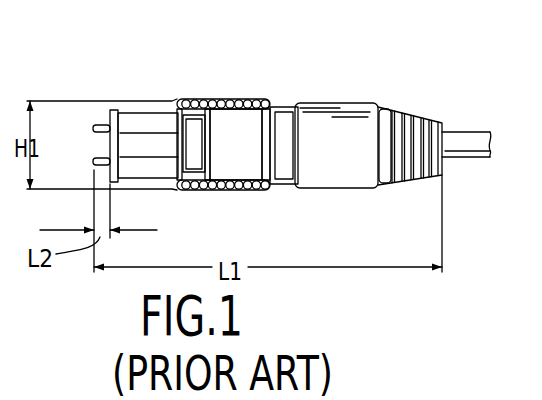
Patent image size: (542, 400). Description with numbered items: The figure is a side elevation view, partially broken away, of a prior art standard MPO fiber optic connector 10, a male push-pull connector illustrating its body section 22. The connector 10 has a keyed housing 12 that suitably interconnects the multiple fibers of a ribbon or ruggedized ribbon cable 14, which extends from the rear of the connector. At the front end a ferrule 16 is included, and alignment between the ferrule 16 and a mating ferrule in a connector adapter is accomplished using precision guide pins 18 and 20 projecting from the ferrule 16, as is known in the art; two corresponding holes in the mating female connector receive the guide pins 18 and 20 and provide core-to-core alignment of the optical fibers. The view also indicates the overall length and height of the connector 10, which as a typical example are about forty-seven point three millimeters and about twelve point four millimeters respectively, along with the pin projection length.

The fiber optic connector 10 is at (342, 95).
The keyed housing 12 is at (273, 198).
The ribbon cable 14 is at (458, 140).
The ferrule 16 is at (114, 124).
The guide pin 18 is at (101, 172).
The guide pin 20 is at (107, 127).
The body section 22 is at (210, 189).